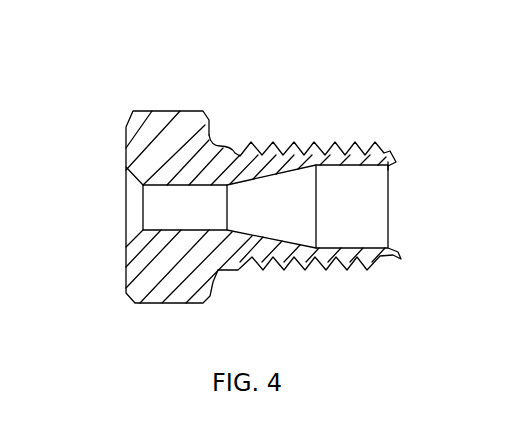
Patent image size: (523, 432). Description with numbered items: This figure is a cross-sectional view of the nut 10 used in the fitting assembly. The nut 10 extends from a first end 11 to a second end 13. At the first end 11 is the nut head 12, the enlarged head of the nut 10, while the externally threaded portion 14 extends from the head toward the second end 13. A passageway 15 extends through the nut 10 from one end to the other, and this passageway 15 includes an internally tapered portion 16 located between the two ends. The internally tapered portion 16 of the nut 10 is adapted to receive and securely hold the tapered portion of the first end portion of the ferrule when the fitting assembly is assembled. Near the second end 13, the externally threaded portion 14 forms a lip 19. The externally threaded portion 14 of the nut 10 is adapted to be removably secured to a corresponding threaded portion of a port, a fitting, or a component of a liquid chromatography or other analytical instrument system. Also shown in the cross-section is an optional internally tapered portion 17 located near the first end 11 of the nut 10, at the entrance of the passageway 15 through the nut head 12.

The nut 10 is at (254, 185).
The first end 11 is at (110, 122).
The nut head 12 is at (152, 292).
The second end 13 is at (326, 202).
The externally threaded portion 14 is at (321, 266).
The passageway 15 is at (170, 209).
The internally tapered portion 16 is at (274, 178).
The internally tapered portion 17 is at (131, 185).
The lip 19 is at (389, 166).